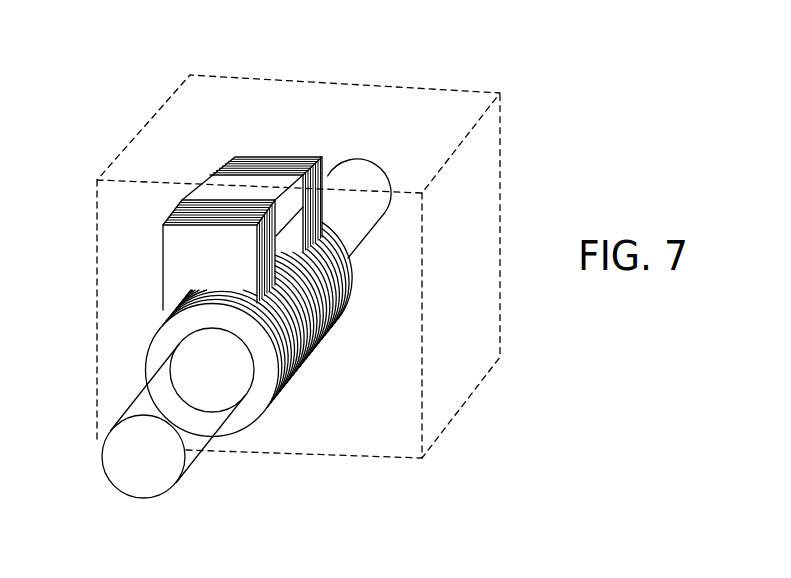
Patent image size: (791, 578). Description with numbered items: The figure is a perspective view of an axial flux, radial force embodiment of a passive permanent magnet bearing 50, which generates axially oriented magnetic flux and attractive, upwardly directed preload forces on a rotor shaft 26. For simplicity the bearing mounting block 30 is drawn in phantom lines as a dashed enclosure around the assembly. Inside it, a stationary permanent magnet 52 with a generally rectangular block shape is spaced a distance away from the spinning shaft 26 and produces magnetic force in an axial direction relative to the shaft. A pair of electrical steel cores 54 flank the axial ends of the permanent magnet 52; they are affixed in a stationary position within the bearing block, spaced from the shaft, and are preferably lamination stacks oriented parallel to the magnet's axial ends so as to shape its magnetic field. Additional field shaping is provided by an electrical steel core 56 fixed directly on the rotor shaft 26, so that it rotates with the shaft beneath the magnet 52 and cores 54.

The rotor shaft 26 is at (130, 468).
The bearing mounting block 30 is at (492, 363).
The permanent magnet bearing 50 is at (330, 137).
The permanent magnet 52 is at (175, 173).
The electrical steel cores 54 is at (263, 157).
The electrical steel core 56 is at (263, 398).